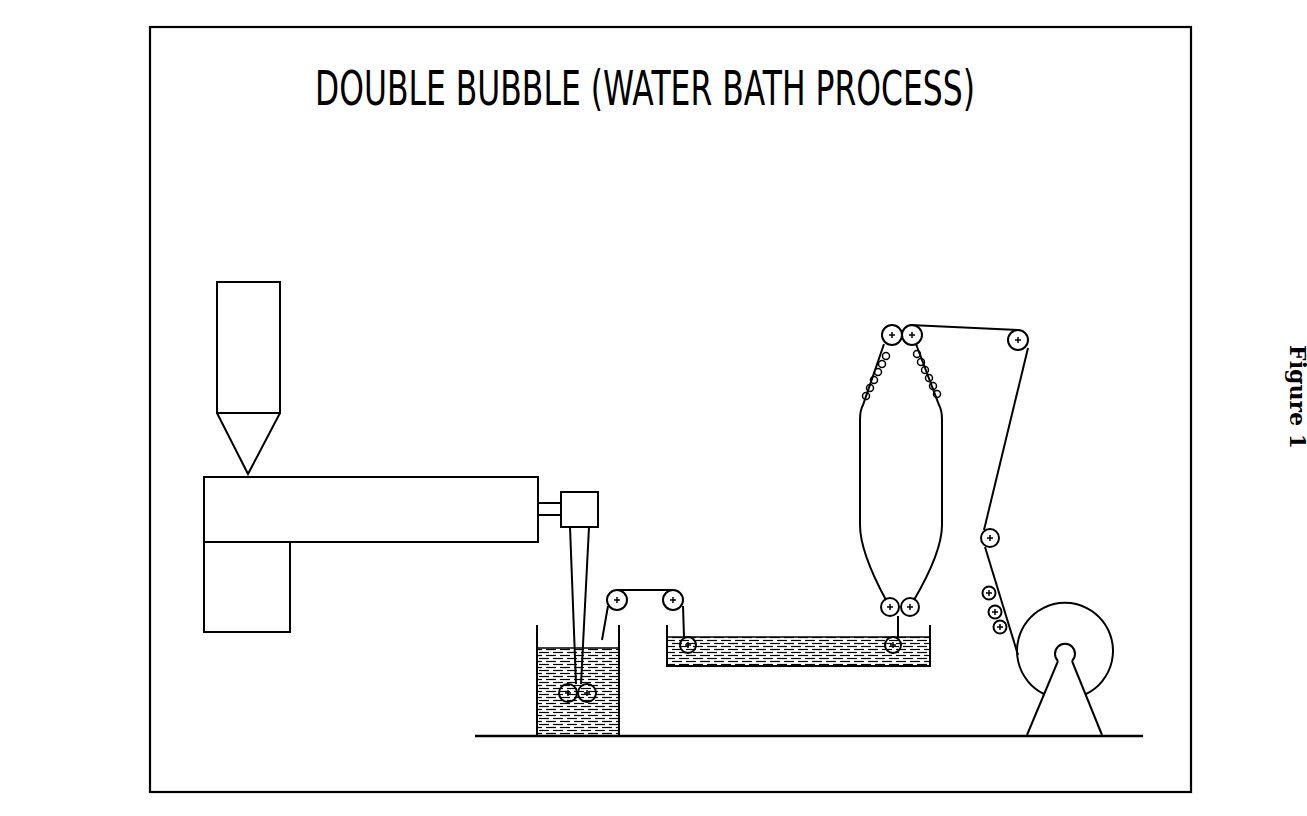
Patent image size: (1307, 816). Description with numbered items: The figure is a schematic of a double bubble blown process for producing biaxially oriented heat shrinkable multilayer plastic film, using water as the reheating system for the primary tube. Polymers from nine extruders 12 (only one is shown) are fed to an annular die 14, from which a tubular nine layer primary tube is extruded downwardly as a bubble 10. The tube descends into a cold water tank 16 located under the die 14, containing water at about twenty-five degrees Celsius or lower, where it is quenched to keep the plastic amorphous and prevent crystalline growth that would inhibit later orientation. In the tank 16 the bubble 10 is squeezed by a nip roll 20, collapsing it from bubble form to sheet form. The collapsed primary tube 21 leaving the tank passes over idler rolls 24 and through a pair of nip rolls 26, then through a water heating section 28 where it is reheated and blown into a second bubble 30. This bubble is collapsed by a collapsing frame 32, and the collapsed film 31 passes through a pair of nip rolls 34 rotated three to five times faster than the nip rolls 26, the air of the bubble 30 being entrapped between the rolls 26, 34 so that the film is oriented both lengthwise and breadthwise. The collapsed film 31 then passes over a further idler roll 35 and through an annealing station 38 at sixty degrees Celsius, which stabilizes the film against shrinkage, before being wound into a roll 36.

The bubble 10 is at (566, 572).
The extruder 12 is at (382, 457).
The annular die 14 is at (601, 449).
The cold water tank 16 is at (540, 671).
The nip roll 20 is at (635, 736).
The collapsed primary tube 21 is at (655, 547).
The idler rolls 24 is at (721, 570).
The nip rolls 26 is at (850, 594).
The water heating section 28 is at (798, 680).
The second bubble 30 is at (840, 427).
The collapsed film 31 is at (989, 321).
The collapsing frame 32 is at (862, 270).
The nip rolls 34 is at (893, 262).
The roller 35 is at (1052, 517).
The roll 36 is at (1087, 607).
The annealing station 38 is at (976, 648).